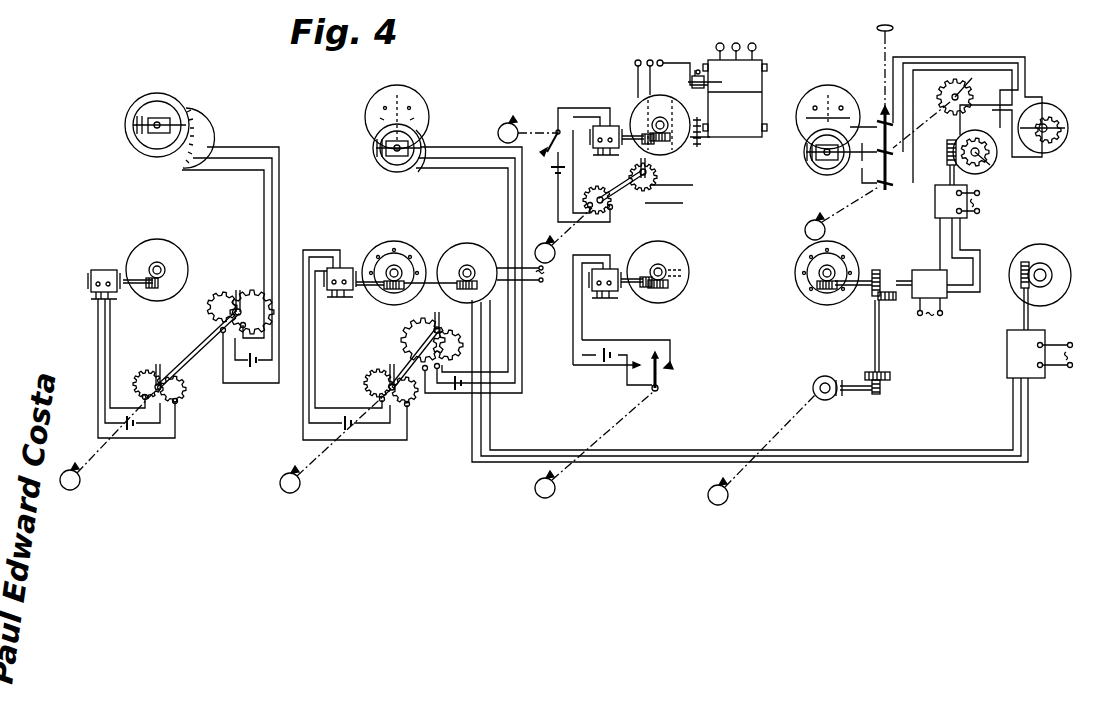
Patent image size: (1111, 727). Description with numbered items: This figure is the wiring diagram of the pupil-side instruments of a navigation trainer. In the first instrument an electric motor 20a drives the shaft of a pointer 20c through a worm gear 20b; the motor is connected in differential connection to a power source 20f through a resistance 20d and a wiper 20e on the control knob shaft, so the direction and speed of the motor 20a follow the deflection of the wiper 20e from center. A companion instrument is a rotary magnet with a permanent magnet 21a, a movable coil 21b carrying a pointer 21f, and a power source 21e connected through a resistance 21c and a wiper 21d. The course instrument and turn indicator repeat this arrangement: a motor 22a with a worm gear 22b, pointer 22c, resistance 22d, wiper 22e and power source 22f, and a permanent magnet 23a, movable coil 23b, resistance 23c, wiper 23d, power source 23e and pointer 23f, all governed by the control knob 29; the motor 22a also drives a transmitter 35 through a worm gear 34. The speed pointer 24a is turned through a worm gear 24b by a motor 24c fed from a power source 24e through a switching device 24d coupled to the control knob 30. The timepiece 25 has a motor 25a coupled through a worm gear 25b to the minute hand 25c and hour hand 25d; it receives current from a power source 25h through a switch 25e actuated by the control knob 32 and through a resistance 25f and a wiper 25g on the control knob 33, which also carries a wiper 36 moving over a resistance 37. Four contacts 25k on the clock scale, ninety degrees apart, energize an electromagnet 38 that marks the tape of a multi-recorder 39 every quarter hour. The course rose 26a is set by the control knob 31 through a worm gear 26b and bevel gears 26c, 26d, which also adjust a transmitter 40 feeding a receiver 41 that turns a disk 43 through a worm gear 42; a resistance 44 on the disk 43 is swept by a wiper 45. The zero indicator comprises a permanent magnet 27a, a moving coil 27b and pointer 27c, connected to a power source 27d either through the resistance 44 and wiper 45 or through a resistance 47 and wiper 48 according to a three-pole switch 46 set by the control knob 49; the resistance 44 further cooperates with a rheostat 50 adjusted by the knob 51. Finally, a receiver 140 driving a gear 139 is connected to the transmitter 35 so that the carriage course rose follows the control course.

The electric motor 20a is at (106, 270).
The worm gear 20b is at (168, 278).
The pointer 20c is at (160, 292).
The resistance 20d is at (147, 370).
The wiper 20e is at (162, 372).
The power source 20f is at (138, 428).
The permanent magnet 21a is at (178, 112).
The movable coil 21b is at (156, 116).
The resistance 21c is at (252, 290).
The wiper 21d is at (230, 300).
The power source 21e is at (255, 366).
The pointer 21f is at (137, 128).
The motor 22a is at (340, 298).
The worm gear 22b is at (404, 270).
The pointer 22c is at (384, 256).
The resistance 22d is at (362, 380).
The wiper 22e is at (376, 370).
The power source 22f is at (352, 430).
The permanent magnet 23a is at (378, 156).
The movable coil 23b is at (378, 140).
The resistance 23c is at (408, 332).
The wiper 23d is at (440, 326).
The power source 23e is at (456, 388).
The pointer 23f is at (408, 112).
The pointer 24a is at (680, 270).
The worm gear 24b is at (672, 290).
The motor 24c is at (608, 298).
The switching device 24d is at (662, 378).
The power source 24e is at (616, 352).
The timepiece instrument 25 is at (648, 148).
The motor 25a is at (610, 126).
The worm gear 25b is at (680, 145).
The minute hand 25c is at (656, 62).
The hour hand 25d is at (636, 80).
The switch 25e is at (556, 128).
The resistance 25f is at (610, 206).
The wiper 25g is at (598, 186).
The power source 25h is at (552, 172).
The contacts 25k is at (700, 150).
The course rose 26a is at (843, 262).
The worm gear 26b is at (820, 290).
The bevel gear 26c is at (872, 298).
The bevel gear 26d is at (884, 390).
The permanent magnet 27a is at (810, 156).
The coil 27b is at (818, 170).
The pointer 27c is at (822, 100).
The power source 27d is at (848, 138).
The control knob 29 is at (80, 480).
The control knob 30 is at (536, 488).
The control knob 31 is at (710, 492).
The control knob 32 is at (514, 122).
The control knob 33 is at (544, 242).
The worm gear 34 is at (478, 248).
The transmitter 35 is at (458, 245).
The wiper 36 is at (652, 167).
The resistance 37 is at (682, 193).
The electromagnet 38 is at (698, 70).
The multi-recorder 39 is at (762, 70).
The transmitter 40 is at (932, 270).
The receiver 41 is at (935, 206).
The worm gear 42 is at (958, 160).
The disk 43 is at (996, 160).
The resistance 44 is at (982, 131).
The wiper 45 is at (985, 172).
The three-pole switch 46 is at (882, 190).
The resistance 47 is at (1068, 128).
The wiper 48 is at (1053, 108).
The control knob 49 is at (880, 26).
The rheostat 50 is at (960, 84).
The knob 51 is at (806, 226).
The gear 139 is at (1050, 254).
The receiver 140 is at (1045, 336).